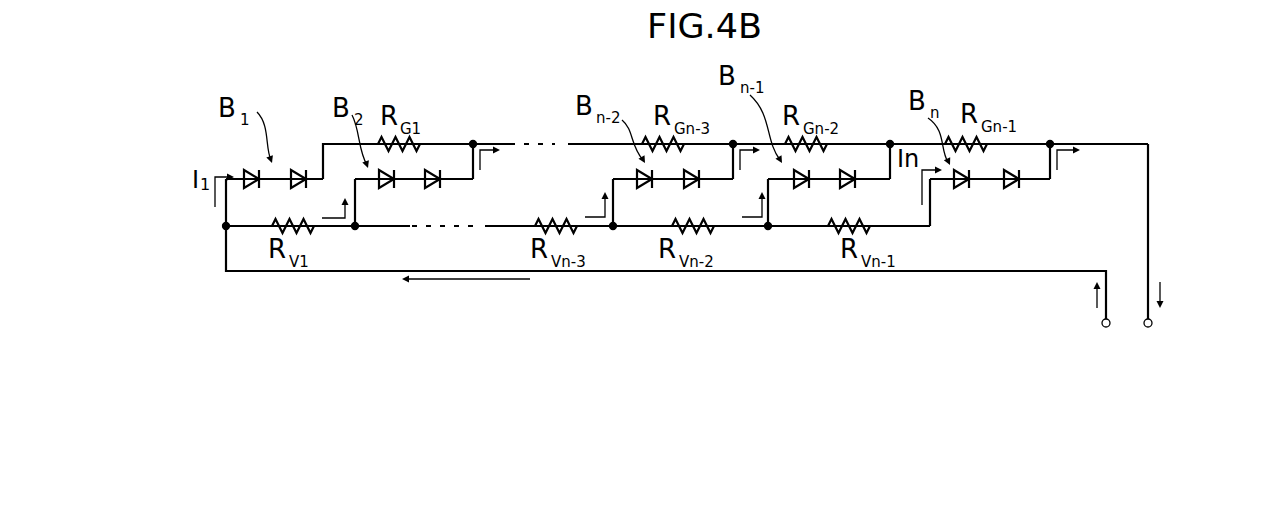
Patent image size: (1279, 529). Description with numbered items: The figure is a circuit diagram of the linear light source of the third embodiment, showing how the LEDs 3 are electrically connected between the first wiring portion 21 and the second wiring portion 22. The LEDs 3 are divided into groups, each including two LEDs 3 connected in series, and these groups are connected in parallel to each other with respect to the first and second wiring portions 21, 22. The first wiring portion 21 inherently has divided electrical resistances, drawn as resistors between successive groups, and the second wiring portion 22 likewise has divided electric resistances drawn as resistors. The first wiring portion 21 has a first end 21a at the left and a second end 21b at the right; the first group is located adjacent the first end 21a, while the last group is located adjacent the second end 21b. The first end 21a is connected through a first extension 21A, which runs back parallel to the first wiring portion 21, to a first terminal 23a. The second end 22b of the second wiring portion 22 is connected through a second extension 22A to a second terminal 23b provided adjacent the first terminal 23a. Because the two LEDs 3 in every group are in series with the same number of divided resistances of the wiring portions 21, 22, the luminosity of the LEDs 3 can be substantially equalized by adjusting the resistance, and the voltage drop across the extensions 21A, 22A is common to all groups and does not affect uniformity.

The LED 3 is at (292, 174).
The first wiring portion 21 is at (738, 226).
The first end 21a is at (226, 226).
The second end 21b is at (930, 226).
The first extension 21A is at (618, 271).
The second wiring portion 22 is at (853, 143).
The second end 22b is at (1050, 144).
The second extension 22A is at (1148, 172).
The first terminal 23a is at (1102, 327).
The second terminal 23b is at (1152, 325).